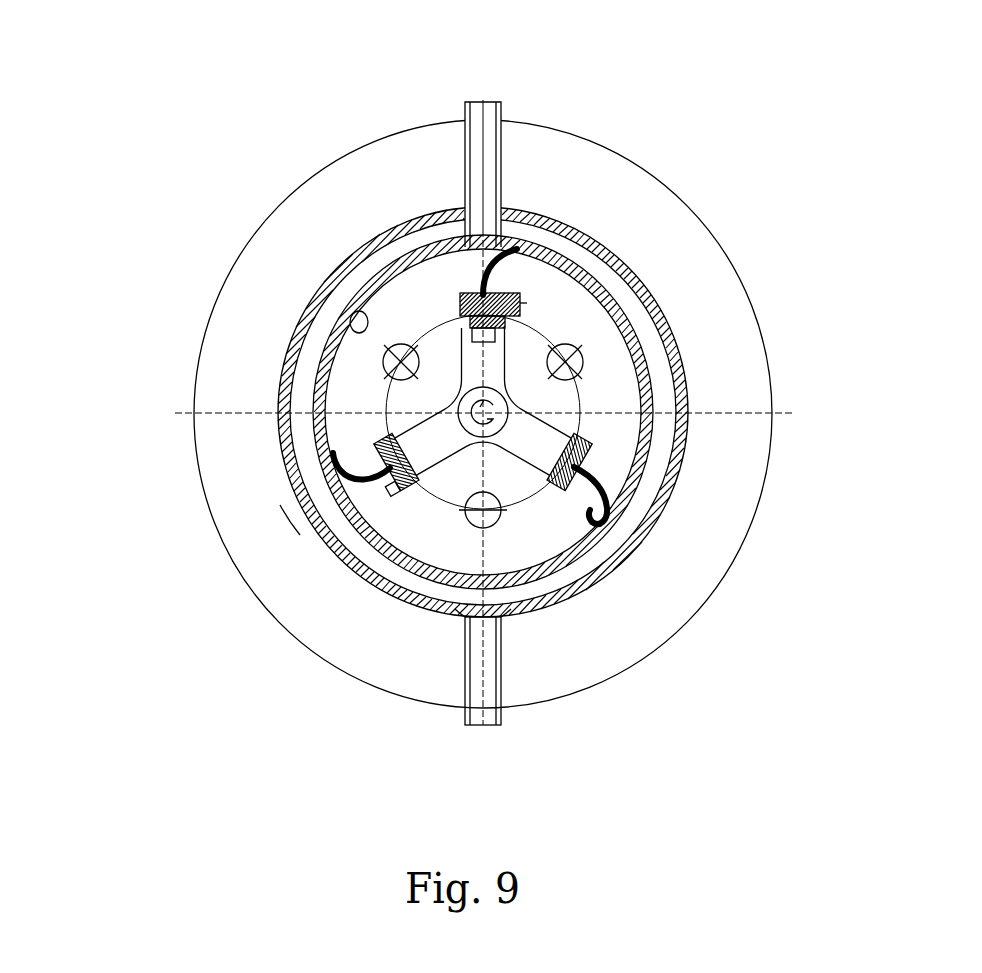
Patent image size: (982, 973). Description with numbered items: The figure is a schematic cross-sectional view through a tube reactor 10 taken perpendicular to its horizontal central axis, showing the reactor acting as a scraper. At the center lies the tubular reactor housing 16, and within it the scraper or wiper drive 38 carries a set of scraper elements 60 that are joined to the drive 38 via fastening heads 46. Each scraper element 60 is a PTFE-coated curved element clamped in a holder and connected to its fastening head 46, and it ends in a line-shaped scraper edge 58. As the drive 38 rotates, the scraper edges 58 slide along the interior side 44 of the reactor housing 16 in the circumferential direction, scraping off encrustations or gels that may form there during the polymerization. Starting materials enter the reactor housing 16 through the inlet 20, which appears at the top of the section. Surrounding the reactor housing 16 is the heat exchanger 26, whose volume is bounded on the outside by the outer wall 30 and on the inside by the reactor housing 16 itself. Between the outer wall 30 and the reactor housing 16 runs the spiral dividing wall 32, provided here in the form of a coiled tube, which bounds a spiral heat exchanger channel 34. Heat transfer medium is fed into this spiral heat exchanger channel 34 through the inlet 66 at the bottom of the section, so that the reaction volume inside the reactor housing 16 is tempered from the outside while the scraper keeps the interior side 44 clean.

The reactor 10 is at (633, 770).
The reactor housing 16 is at (280, 387).
The inlet 20 is at (485, 100).
The heat exchanger 26 is at (666, 159).
The outer wall 30 is at (168, 468).
The spiral dividing wall 32 is at (310, 533).
The spiral heat exchanger channel 34 is at (363, 638).
The drive 38 is at (535, 330).
The interior side 44 is at (352, 303).
The fastening head 46 is at (590, 443).
The scraper or wiper edge 58 is at (580, 537).
The scraper or wiper element 60 is at (603, 480).
The inlet 66 is at (482, 737).